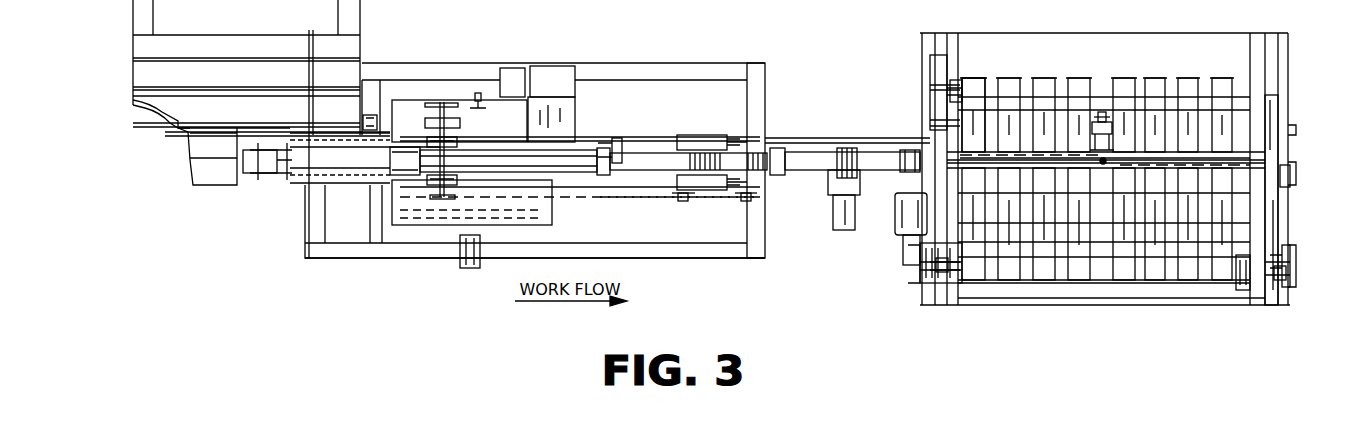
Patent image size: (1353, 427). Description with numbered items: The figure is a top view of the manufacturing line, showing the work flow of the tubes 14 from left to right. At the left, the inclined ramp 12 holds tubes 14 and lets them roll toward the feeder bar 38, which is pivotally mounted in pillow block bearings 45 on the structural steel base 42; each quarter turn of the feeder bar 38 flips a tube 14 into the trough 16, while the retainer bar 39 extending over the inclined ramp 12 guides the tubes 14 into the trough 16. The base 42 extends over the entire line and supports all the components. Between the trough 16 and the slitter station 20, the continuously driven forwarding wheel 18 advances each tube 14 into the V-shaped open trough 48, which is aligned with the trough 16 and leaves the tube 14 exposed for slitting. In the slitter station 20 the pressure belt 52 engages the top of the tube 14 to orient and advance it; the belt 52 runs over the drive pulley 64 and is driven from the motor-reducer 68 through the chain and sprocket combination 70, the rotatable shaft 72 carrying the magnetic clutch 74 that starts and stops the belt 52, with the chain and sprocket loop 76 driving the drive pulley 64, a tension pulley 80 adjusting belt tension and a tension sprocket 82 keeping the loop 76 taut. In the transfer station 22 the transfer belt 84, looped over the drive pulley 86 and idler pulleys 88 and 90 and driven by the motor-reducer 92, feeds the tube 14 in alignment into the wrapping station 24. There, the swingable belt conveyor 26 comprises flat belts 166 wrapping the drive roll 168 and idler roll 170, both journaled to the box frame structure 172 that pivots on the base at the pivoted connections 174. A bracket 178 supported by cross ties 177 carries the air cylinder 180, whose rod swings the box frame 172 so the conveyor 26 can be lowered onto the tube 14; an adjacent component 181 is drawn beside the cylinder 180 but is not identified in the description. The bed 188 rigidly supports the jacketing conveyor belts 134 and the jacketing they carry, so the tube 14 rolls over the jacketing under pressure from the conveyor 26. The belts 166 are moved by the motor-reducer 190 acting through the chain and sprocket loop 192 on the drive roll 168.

The inclined ramp 12 is at (228, 22).
The tube 14 is at (218, 98).
The trough 16 is at (222, 185).
The forwarding wheel 18 is at (256, 168).
The slitter station 20 is at (543, 38).
The transfer station 22 is at (828, 38).
The wrapping station 24 is at (1088, 20).
The swingable belt conveyor 26 is at (1060, 76).
The feeder bar 38 is at (133, 100).
The retainer bar 39 is at (310, 30).
The structural steel base 42 is at (710, 258).
The pillow block bearings 45 is at (372, 116).
The open trough 48 is at (343, 183).
The pressure belt 52 is at (662, 135).
The drive pulley 64 is at (742, 201).
The motor-reducer 68 is at (570, 67).
The chain and sprocket combination 70 is at (478, 93).
The rotatable shaft 72 is at (442, 102).
The magnetic clutch 74 is at (428, 118).
The chain and sprocket loop 76 is at (628, 196).
The tension pulley 80 is at (623, 140).
The tension sprocket 82 is at (683, 201).
The transfer belt 84 is at (812, 150).
The drive pulley 86 is at (857, 148).
The idler pulley 88 is at (787, 148).
The idler pulley 90 is at (908, 148).
The motor-reducer 92 is at (845, 218).
The jacketing conveyor belts 134 is at (1285, 262).
The flat belts 166 is at (1217, 78).
The drive roll 168 is at (1242, 290).
The idler roll 170 is at (955, 80).
The box frame structure 172 is at (1262, 116).
The pivoted connections 174 is at (940, 262).
The cross ties 177 is at (940, 60).
The bracket 178 is at (1262, 162).
The air cylinder 180 is at (1100, 135).
The clamp screw 181 is at (1108, 128).
The bed 188 is at (1130, 305).
The motor-reducer 190 is at (905, 224).
The chain and sprocket loop 192 is at (965, 262).